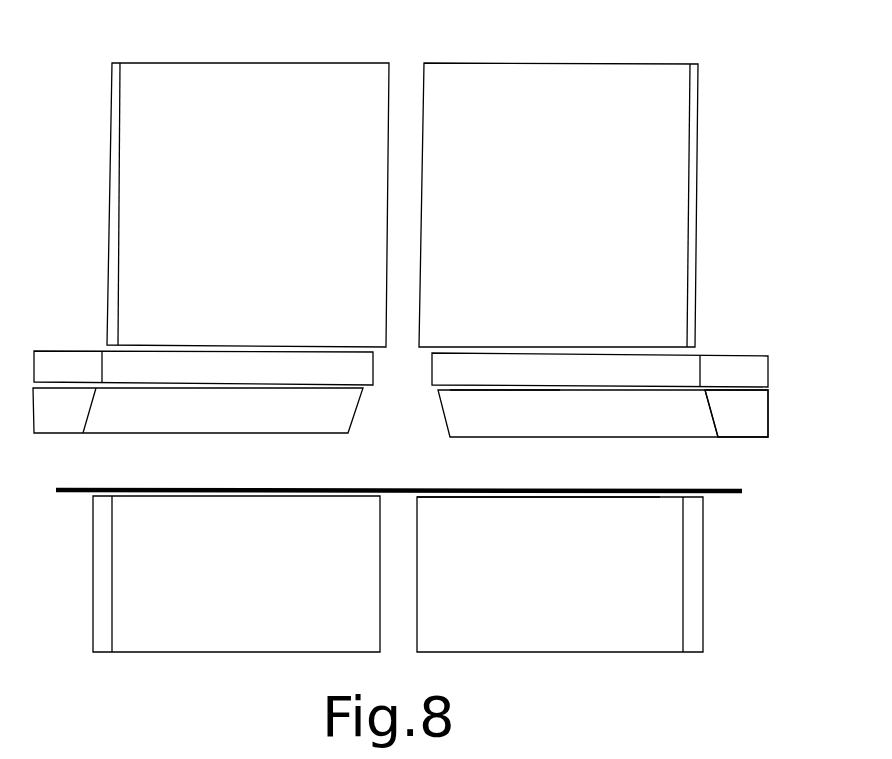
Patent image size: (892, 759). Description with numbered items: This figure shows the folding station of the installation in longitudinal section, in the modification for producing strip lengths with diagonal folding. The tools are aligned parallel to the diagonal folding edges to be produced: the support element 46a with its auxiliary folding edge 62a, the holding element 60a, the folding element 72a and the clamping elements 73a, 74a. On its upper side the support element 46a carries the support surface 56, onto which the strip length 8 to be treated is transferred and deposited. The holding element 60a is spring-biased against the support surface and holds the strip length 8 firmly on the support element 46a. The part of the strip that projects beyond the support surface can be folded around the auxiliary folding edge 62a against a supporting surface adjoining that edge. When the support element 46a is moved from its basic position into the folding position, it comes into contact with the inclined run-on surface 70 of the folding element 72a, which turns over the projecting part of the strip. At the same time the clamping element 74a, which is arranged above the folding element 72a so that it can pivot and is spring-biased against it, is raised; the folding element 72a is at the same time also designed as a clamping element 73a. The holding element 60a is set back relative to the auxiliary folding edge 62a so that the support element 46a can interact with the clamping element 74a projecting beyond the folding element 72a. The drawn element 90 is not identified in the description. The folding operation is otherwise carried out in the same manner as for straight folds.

The holding element 60a is at (670, 166).
The clamping element 74a is at (727, 370).
The folding element 72a is at (753, 416).
The clamping element 73a is at (787, 423).
The inclined run-on surface 70 is at (608, 416).
The interface line 90 is at (531, 390).
The strip length 8 is at (396, 484).
The support surface 56 is at (590, 500).
The support element 46a is at (668, 578).
The auxiliary folding edge 62a is at (703, 500).